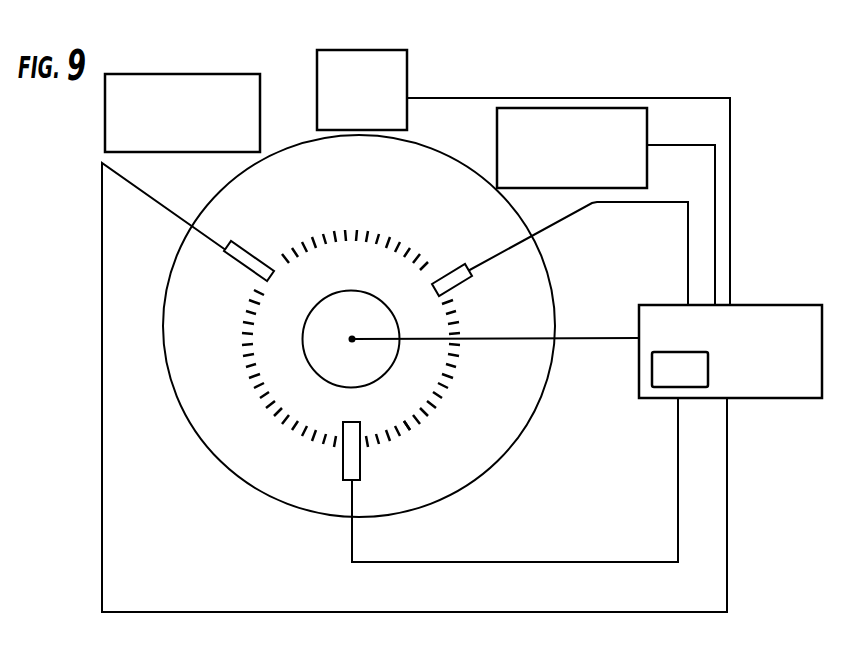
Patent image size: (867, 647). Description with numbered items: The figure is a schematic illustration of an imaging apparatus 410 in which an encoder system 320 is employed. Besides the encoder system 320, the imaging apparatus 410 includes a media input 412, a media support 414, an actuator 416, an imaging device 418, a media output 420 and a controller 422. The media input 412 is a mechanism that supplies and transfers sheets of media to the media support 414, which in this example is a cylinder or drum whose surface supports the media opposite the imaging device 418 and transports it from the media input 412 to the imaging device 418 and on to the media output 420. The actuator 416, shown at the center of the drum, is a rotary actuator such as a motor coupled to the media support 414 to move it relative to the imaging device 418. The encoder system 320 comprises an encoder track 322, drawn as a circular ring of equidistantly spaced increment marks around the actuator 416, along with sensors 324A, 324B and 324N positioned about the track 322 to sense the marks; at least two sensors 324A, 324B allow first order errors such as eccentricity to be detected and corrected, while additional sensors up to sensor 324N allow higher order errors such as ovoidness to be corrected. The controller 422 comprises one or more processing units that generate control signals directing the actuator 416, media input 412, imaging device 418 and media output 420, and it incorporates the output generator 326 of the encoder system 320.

The imaging apparatus 410 is at (560, 68).
The media input 412 is at (648, 130).
The media support 414 is at (553, 286).
The actuator 416 is at (407, 358).
The imaging device 418 is at (407, 83).
The media output 420 is at (168, 73).
The controller 422 is at (765, 305).
The output generator 326 is at (708, 371).
The encoder track 322 is at (425, 419).
The encoder system 320 is at (410, 441).
The sensor 324A is at (238, 246).
The sensor 324B is at (455, 265).
The sensor 324N is at (343, 448).